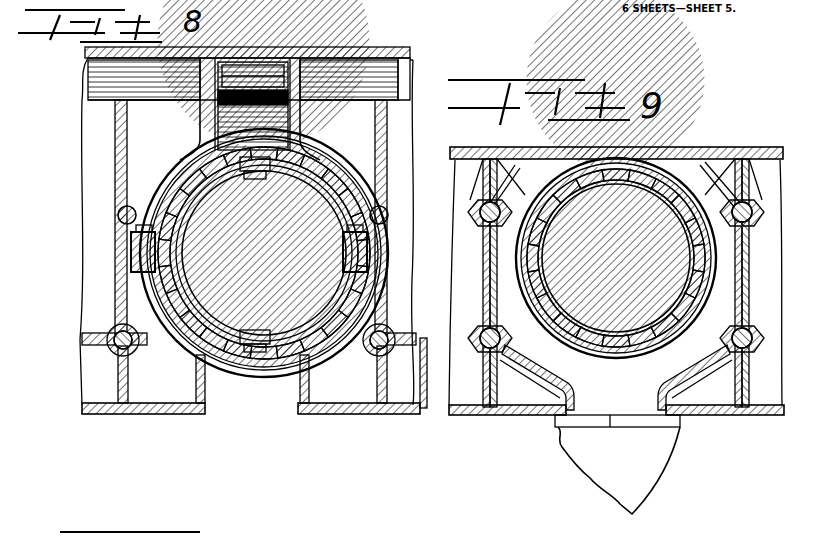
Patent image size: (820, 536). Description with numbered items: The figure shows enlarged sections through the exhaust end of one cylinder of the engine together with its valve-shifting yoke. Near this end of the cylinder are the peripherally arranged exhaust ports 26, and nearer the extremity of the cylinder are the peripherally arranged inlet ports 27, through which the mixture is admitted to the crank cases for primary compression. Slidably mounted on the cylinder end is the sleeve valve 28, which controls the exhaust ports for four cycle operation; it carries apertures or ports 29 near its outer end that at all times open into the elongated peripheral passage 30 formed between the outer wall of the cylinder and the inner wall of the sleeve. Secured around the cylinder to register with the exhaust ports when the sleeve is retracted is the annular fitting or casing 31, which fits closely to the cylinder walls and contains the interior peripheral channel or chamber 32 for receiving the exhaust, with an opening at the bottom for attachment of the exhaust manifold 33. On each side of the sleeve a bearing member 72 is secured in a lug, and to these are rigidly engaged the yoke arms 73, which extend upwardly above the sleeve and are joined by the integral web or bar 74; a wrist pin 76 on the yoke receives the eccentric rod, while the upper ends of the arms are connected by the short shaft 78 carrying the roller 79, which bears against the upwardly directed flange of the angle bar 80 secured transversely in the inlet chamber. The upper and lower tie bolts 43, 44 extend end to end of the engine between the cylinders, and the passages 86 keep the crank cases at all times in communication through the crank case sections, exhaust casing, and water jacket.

In FIG. 9, the exhaust ports 26 is at (668, 195).
In FIG. 8, the inlet ports 27 is at (251, 338).
In FIG. 8, the sleeve valve 28 is at (305, 205).
In FIG. 9, the sleeve valve 28 is at (612, 172).
In FIG. 8, the apertures or ports 29 is at (190, 340).
In FIG. 8, the elongated peripheral passage 30 is at (340, 305).
In FIG. 9, the annular fitting or casing 31 is at (724, 170).
In FIG. 9, the interior peripheral channel or chamber 32 is at (562, 428).
In FIG. 9, the exhaust manifold 33 is at (648, 472).
In FIG. 8, the upper tie bolt 43 is at (389, 212).
In FIG. 9, the upper tie bolt 43 is at (746, 205).
In FIG. 8, the lower tie bolt 44 is at (482, 344).
In FIG. 9, the lower tie bolt 44 is at (700, 360).
In FIG. 8, the bearing member 72 is at (134, 262).
In FIG. 8, the yoke arms 73 is at (322, 160).
In FIG. 8, the integral web or bar 74 is at (225, 127).
In FIG. 8, the wrist pin 76 is at (310, 105).
In FIG. 8, the short shaft 78 is at (296, 75).
In FIG. 8, the roller 79 is at (262, 80).
In FIG. 8, the angle bar 80 is at (392, 88).
In FIG. 8, the passages 86 is at (183, 385).
In FIG. 9, the passages 86 is at (527, 390).